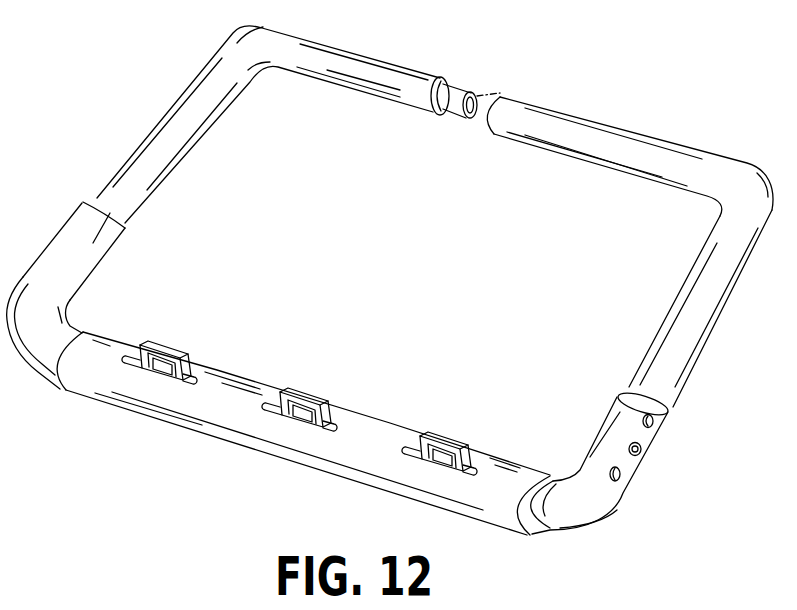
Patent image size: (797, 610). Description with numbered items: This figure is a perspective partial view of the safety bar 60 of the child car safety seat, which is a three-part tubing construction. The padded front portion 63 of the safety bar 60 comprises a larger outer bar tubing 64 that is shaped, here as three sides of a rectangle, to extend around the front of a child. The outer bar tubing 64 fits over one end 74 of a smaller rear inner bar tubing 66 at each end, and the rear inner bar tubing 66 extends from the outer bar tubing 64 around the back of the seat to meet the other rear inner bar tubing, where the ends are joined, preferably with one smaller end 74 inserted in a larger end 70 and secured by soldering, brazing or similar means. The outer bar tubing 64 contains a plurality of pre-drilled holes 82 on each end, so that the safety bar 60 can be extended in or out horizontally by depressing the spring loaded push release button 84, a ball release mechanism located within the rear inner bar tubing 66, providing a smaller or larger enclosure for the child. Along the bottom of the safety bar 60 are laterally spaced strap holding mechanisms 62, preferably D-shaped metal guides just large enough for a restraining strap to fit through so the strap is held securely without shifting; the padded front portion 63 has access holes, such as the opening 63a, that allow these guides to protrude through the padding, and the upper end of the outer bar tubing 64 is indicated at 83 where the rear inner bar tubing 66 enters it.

The safety bar 60 is at (188, 55).
The strap holding mechanism 62 is at (163, 345).
The padded front portion 63 is at (178, 408).
The sleeve slot surface 63a is at (222, 372).
The outer bar tubing 64 is at (633, 471).
The rear inner bar tubing 66 is at (708, 303).
The larger end 70 is at (500, 95).
The smaller end 74 is at (466, 90).
The pre-drilled holes 82 is at (655, 420).
The tube end 83 is at (636, 389).
The spring loaded push release button 84 is at (642, 450).